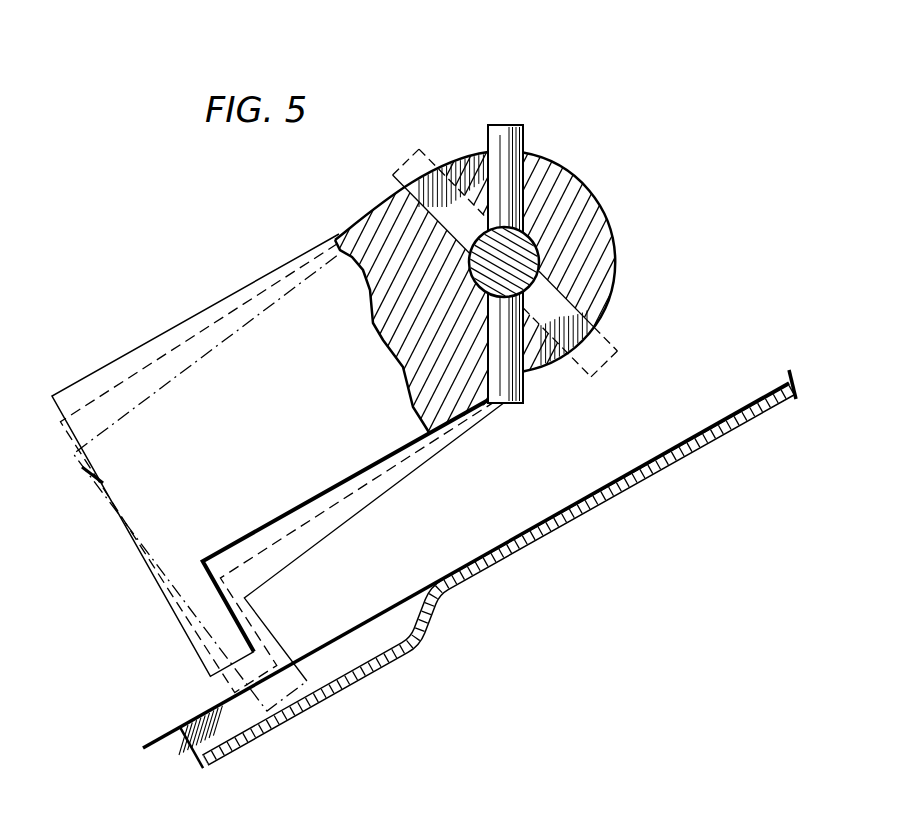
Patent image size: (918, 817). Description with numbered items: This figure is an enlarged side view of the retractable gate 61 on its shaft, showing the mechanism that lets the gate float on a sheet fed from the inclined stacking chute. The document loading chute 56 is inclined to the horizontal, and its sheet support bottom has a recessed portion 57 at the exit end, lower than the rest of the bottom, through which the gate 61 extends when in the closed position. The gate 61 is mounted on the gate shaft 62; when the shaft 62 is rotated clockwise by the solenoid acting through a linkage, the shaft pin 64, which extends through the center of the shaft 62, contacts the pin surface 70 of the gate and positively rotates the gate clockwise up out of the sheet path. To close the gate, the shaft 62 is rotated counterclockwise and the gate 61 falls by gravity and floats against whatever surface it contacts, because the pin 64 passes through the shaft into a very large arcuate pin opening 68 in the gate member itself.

The document loading chute 56 is at (443, 592).
The recessed portion 57 is at (325, 706).
The gate 61 is at (132, 363).
The gate shaft 62 is at (522, 261).
The shaft pin 64 is at (500, 145).
The arcuate pin opening 68 is at (597, 328).
The pin surface 70 is at (508, 370).